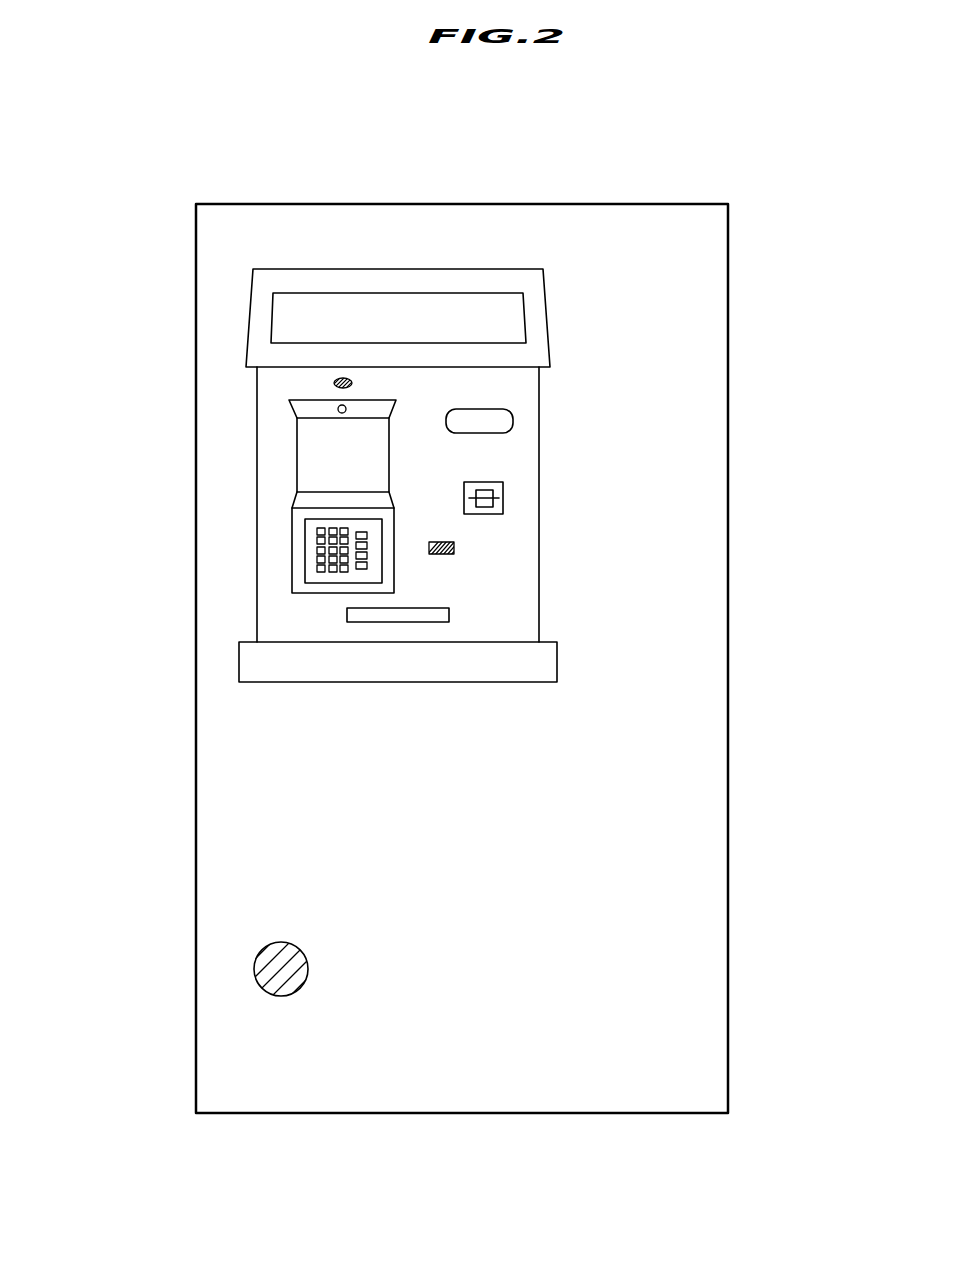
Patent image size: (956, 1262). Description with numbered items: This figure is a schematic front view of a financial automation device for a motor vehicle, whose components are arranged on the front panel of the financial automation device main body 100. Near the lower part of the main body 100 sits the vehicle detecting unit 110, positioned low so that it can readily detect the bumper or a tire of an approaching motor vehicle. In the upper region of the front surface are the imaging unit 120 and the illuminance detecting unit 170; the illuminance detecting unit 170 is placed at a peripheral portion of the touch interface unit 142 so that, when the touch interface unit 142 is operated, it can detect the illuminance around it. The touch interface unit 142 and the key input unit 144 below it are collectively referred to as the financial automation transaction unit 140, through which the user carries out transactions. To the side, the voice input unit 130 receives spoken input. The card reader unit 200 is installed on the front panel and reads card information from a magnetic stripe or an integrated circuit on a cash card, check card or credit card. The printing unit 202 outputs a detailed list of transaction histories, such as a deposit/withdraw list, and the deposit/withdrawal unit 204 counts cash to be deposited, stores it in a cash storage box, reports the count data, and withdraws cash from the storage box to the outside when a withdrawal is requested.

The financial automation device main body 100 is at (728, 280).
The vehicle detecting unit 110 is at (253, 968).
The imaging unit 120 is at (341, 405).
The voice input unit 130 is at (454, 548).
The financial automation transaction unit 140 is at (215, 505).
The touch interface unit 142 is at (304, 452).
The key input unit 144 is at (310, 563).
The illuminance detecting unit 170 is at (343, 378).
The card reader unit 200 is at (503, 498).
The printing unit 202 is at (513, 420).
The deposit/withdrawal unit 204 is at (449, 615).